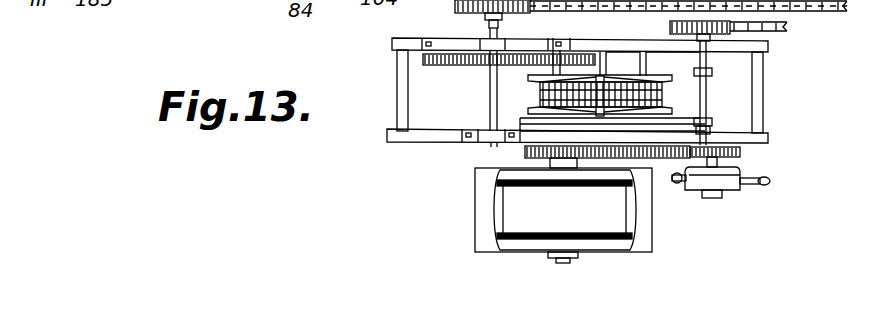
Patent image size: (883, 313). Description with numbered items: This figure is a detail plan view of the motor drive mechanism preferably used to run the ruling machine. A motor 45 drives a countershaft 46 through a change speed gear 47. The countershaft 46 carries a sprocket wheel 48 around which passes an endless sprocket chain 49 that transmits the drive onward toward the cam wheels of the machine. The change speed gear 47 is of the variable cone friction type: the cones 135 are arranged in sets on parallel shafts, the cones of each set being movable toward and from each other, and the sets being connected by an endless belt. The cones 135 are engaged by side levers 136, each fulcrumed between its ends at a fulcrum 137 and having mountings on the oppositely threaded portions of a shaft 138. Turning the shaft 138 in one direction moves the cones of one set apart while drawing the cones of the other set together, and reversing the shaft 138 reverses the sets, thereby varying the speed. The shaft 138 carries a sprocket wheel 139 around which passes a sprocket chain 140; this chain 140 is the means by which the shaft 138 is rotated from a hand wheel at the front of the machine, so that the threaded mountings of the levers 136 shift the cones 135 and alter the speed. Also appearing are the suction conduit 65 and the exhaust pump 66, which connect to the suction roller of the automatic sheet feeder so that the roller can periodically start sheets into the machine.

The motor 45 is at (613, 216).
The countershaft 46 is at (495, 90).
The change speed gear 47 is at (665, 94).
The sprocket wheel 48 is at (461, 12).
The endless sprocket chain 49 is at (811, 12).
The suction conduit 65 is at (672, 191).
The exhaust pump 66 is at (727, 187).
The cones 135 is at (548, 110).
The side levers 136 is at (535, 123).
The fulcrum 137 is at (623, 63).
The shaft 138 is at (705, 63).
The sprocket wheel 139 is at (673, 33).
The sprocket chain 140 is at (787, 37).